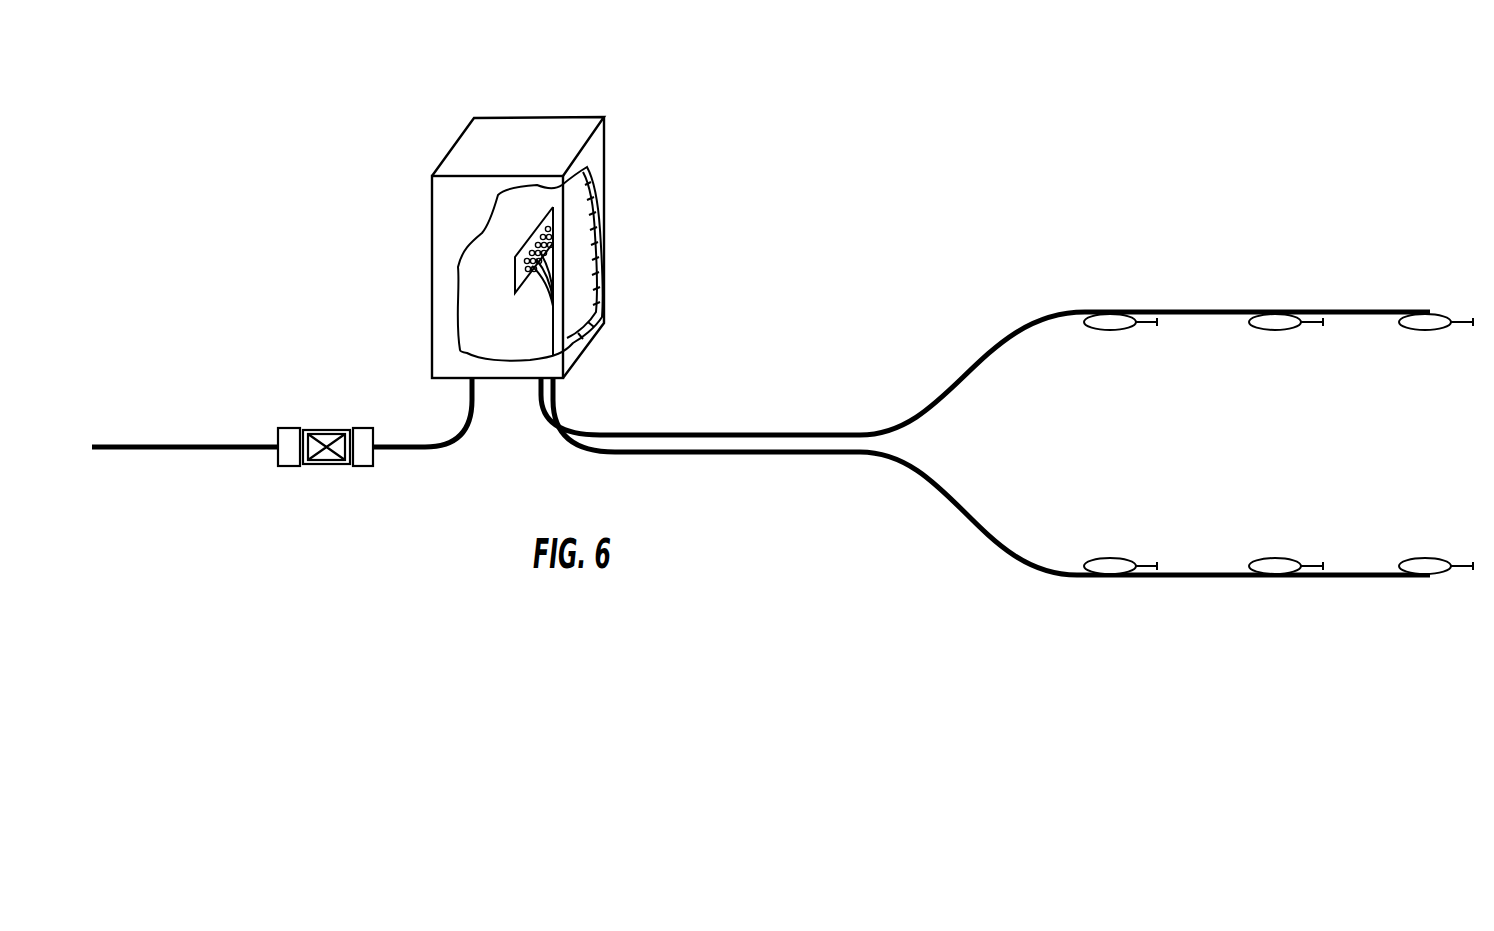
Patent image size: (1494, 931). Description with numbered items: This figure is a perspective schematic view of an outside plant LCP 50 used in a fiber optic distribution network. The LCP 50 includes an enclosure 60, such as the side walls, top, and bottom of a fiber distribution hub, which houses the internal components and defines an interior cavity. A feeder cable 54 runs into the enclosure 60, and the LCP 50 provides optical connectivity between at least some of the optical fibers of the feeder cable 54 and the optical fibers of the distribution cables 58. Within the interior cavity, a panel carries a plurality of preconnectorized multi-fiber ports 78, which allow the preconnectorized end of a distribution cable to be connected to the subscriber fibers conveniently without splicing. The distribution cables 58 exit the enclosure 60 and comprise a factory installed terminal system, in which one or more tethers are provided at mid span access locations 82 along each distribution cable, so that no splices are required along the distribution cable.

The outside plant LCP 50 is at (647, 158).
The enclosure 60 is at (497, 116).
The preconnectorized multi-fiber ports 78 is at (553, 223).
The feeder cable 54 is at (400, 442).
The distribution cables 58 is at (1007, 332).
The mid span access locations 82 is at (1107, 330).